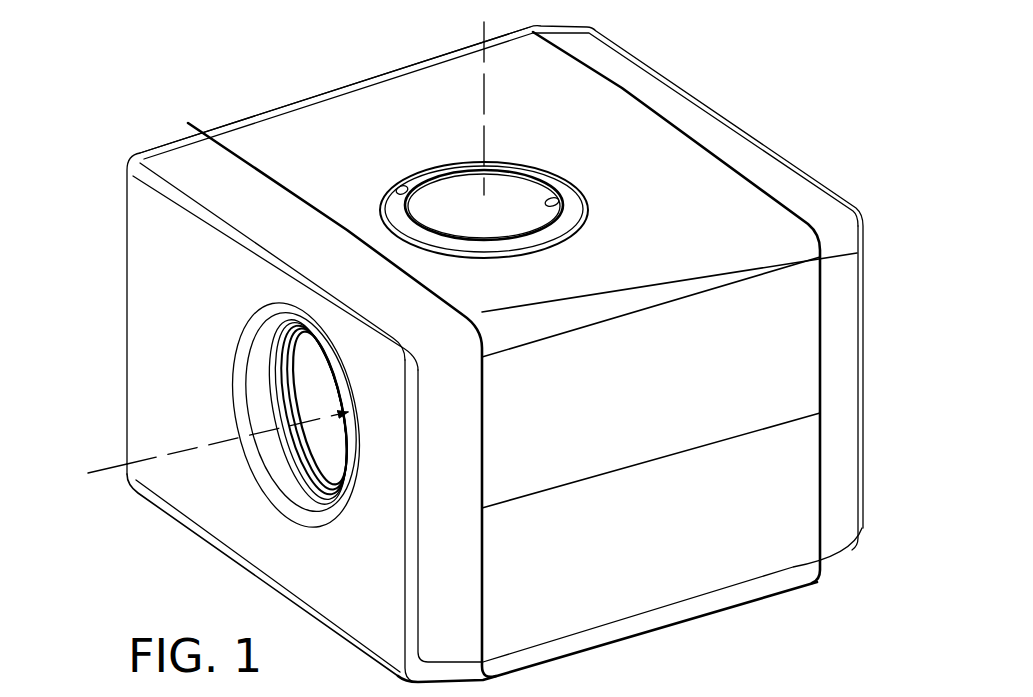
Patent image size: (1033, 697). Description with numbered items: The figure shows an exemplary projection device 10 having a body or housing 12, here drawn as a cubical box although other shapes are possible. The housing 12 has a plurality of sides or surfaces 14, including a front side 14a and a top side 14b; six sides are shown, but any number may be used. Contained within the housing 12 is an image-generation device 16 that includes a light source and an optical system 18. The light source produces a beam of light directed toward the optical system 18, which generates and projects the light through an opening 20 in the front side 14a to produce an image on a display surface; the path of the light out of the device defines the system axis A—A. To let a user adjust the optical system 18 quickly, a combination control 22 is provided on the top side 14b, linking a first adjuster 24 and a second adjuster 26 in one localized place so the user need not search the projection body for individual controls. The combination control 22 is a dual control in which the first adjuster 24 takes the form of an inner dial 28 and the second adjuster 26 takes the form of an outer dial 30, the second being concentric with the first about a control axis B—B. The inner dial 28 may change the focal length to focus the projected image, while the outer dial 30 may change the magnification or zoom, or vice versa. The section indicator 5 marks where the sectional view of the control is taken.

The projection device 10 is at (463, 341).
The housing 12 is at (851, 203).
The sides 14 is at (127, 210).
The front side 14a is at (207, 328).
The top side 14b is at (425, 144).
The image-generation device 16 is at (279, 446).
The optical system 18 is at (310, 495).
The opening 20 is at (317, 520).
The combination control 22 is at (463, 147).
The first adjuster 24 is at (518, 192).
The second adjuster 26 is at (577, 195).
The inner dial 28 is at (503, 232).
The outer dial 30 is at (588, 213).
The section line 5- 5 is at (157, 210).